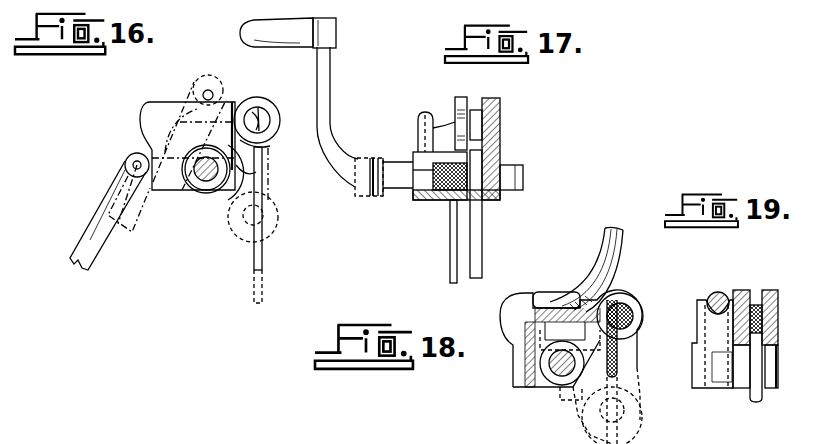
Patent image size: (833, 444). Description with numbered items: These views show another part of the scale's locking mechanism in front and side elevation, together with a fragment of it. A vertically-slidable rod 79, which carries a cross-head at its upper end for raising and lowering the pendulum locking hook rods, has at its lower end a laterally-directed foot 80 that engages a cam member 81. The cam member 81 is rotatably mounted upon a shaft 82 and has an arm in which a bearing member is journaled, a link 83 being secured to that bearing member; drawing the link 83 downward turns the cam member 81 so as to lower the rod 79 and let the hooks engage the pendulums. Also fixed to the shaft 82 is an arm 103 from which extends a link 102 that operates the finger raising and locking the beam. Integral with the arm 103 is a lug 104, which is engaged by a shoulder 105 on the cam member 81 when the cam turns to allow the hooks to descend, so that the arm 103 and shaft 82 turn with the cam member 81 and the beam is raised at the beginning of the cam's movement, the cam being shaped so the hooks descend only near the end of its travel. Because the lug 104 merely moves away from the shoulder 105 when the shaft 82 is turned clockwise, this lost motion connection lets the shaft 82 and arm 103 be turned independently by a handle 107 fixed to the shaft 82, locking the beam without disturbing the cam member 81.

In FIG. 18, the vertically-slidable rod 79 is at (622, 240).
In FIG. 18, the laterally-directed foot 80 is at (553, 292).
In FIG. 19, the laterally-directed foot 80 is at (719, 293).
In FIG. 16, the cam member 81 is at (150, 112).
In FIG. 17, the cam member 81 is at (432, 128).
In FIG. 18, the cam member 81 is at (520, 350).
In FIG. 19, the cam member 81 is at (712, 323).
In FIG. 16, the shaft 82 is at (205, 193).
In FIG. 17, the shaft 82 is at (516, 168).
In FIG. 18, the shaft 82 is at (553, 378).
In FIG. 16, the link 83 is at (263, 255).
In FIG. 17, the link 83 is at (483, 243).
In FIG. 19, the link 83 is at (750, 397).
In FIG. 16, the link 102 is at (100, 246).
In FIG. 16, the arm 103 is at (150, 195).
In FIG. 16, the lug 104 is at (250, 170).
In FIG. 16, the shoulder 105 is at (266, 146).
In FIG. 17, the shoulder 105 is at (436, 200).
In FIG. 17, the handle 107 is at (331, 68).